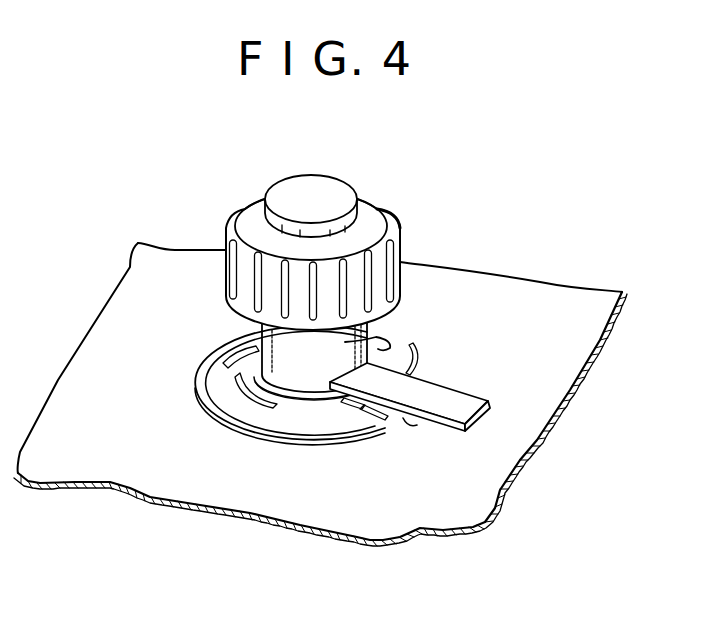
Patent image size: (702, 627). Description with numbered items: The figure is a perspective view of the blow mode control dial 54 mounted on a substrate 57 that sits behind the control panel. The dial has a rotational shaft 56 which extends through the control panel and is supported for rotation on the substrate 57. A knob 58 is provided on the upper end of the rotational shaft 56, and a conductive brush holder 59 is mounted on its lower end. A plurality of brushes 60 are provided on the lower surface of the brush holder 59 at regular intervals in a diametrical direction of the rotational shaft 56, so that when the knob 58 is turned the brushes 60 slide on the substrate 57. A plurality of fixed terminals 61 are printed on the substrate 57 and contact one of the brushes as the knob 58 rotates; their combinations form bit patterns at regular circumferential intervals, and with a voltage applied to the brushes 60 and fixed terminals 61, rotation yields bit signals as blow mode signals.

The blow mode control dial 54 is at (305, 233).
The rotational shaft 56 is at (372, 335).
The substrate 57 is at (248, 483).
The knob 58 is at (230, 232).
The conductive brush holder 59 is at (466, 392).
The brushes 60 is at (408, 420).
The fixed terminals 61 is at (325, 395).